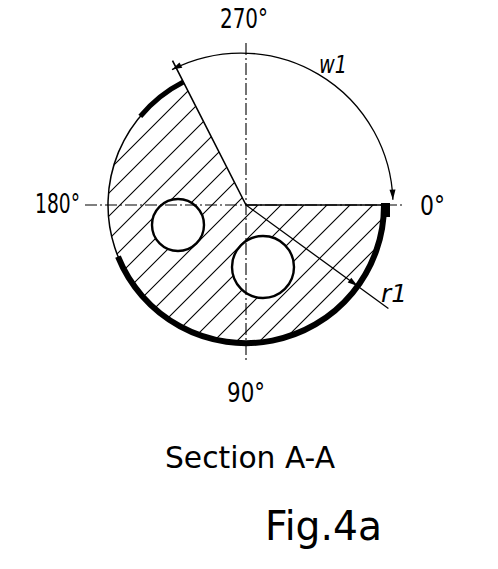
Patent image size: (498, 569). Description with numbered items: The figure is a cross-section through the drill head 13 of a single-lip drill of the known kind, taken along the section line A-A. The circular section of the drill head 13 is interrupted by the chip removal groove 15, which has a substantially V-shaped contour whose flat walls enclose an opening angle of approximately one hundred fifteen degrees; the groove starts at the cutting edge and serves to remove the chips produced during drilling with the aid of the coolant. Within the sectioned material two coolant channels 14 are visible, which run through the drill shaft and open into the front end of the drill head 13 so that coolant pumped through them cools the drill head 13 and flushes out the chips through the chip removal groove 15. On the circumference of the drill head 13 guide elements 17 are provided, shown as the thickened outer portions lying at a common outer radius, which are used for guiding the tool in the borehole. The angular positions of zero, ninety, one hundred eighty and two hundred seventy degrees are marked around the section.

The drill head 13 is at (246, 205).
The coolant channel 14 is at (263, 267).
The chip removal groove 15 is at (291, 191).
The guide element 17 is at (388, 213).